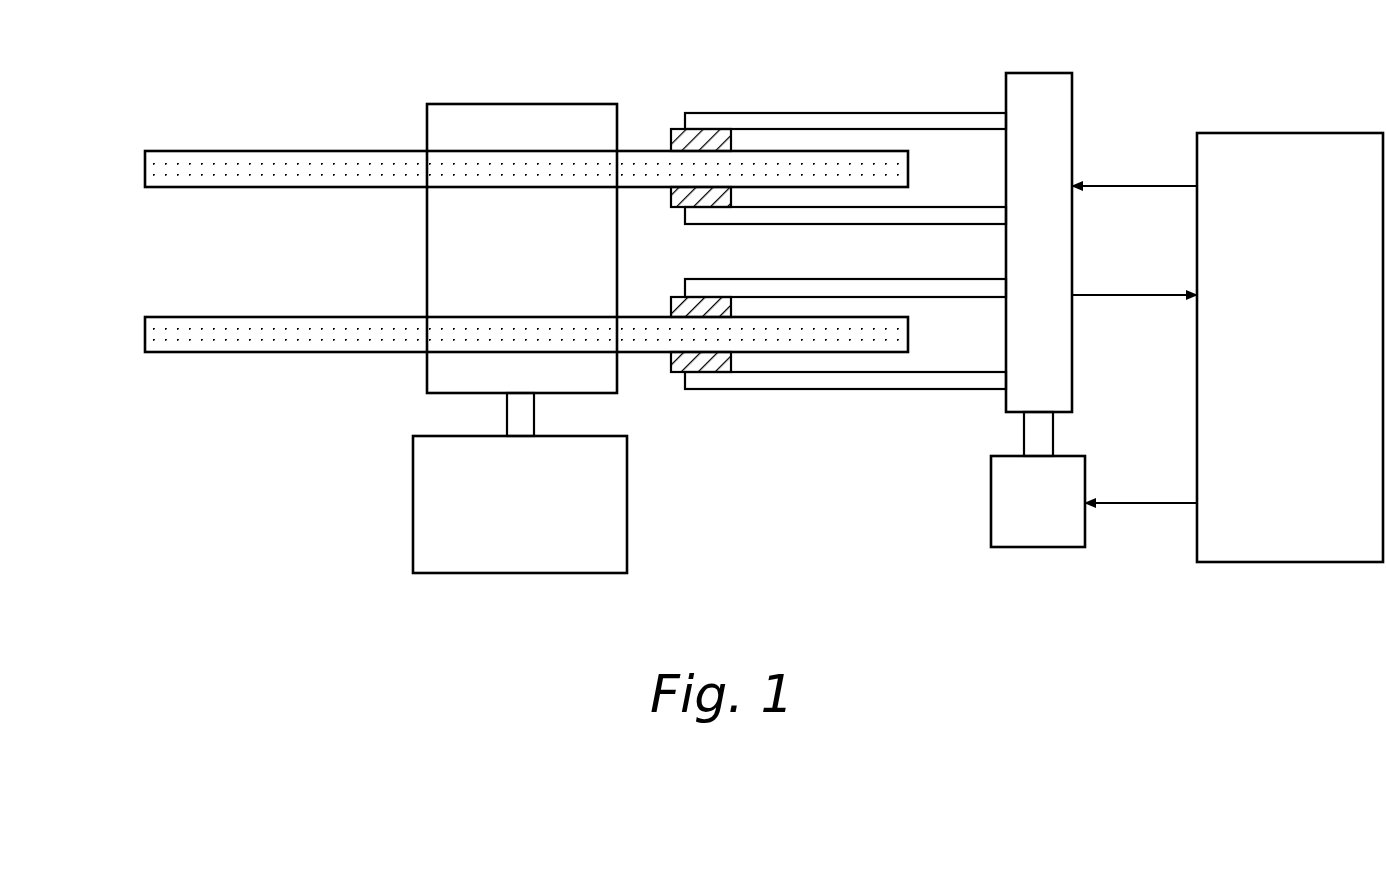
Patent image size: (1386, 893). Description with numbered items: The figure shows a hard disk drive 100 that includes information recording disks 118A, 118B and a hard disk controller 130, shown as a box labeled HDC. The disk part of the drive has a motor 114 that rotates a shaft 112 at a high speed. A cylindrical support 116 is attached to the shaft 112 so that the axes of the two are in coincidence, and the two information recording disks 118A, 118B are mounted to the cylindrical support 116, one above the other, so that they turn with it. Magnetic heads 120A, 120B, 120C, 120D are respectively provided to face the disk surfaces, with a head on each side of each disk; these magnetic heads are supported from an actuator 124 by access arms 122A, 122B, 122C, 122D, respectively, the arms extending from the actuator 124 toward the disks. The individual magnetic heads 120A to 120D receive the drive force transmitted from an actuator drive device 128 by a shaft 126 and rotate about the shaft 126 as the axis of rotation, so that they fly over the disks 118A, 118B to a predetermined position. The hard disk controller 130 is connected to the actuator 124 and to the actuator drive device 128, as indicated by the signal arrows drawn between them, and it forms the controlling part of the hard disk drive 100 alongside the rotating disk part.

The hard disk drive 100 is at (305, 110).
The shaft 112 is at (507, 409).
The motor 114 is at (542, 536).
The cylindrical support 116 is at (471, 103).
The information recording disk 118A is at (178, 151).
The information recording disk 118B is at (178, 352).
The magnetic head 120A is at (672, 130).
The magnetic head 120B is at (674, 206).
The magnetic head 120C is at (677, 297).
The magnetic head 120D is at (674, 373).
The access arm 122A is at (803, 113).
The access arm 122B is at (850, 225).
The access arm 122C is at (826, 279).
The access arm 122D is at (815, 390).
The actuator 124 is at (1074, 91).
The shaft 126 is at (1022, 444).
The actuator drive device 128 is at (990, 506).
The hard disk controller 130 is at (1312, 434).